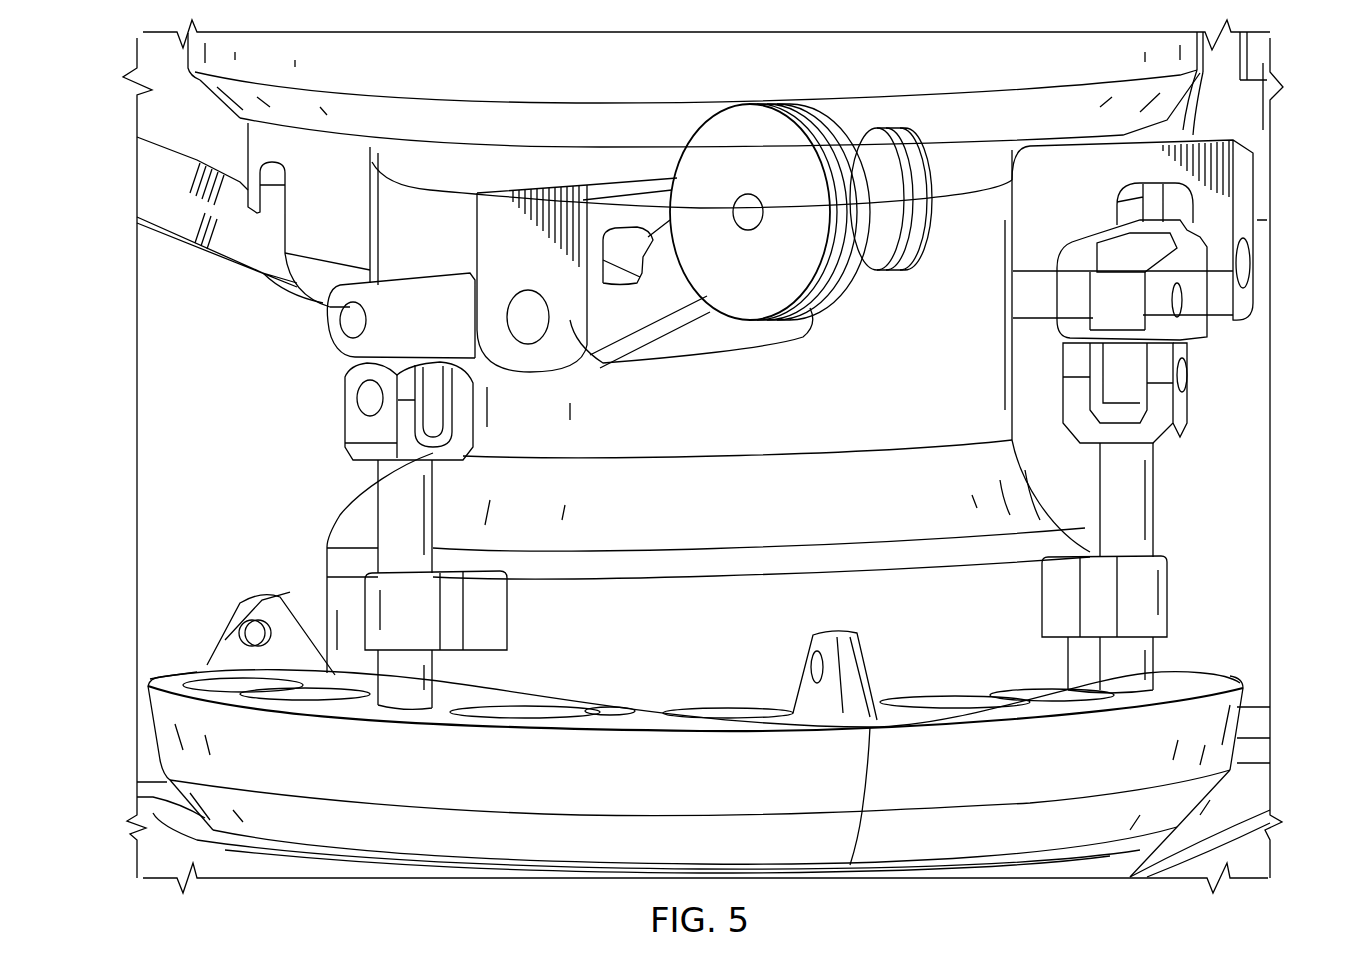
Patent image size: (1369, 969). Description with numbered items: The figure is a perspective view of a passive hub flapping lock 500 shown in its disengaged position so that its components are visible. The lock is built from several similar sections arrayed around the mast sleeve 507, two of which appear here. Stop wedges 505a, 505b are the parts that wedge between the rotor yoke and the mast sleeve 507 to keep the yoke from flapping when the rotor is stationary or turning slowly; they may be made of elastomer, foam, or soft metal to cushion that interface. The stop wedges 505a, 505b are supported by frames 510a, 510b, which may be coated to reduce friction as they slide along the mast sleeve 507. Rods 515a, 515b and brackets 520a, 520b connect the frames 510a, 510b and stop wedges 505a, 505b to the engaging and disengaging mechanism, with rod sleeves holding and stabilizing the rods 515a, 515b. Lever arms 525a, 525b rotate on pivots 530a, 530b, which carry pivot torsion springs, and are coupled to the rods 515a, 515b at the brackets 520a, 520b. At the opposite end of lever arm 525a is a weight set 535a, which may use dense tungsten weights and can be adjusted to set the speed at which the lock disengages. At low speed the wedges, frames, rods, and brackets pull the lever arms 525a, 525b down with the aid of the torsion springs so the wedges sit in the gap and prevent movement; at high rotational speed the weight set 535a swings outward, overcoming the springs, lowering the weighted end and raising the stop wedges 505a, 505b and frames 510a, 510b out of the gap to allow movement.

The passive hub flapping lock 500 is at (228, 396).
The stop wedge 505a is at (559, 786).
The stop wedge 505b is at (1071, 778).
The mast sleeve 507 is at (845, 420).
The frame 510a is at (553, 703).
The frame 510b is at (983, 693).
The rod 515a is at (375, 502).
The rod 515b is at (1153, 505).
The bracket 520a is at (350, 427).
The bracket 520b is at (1187, 407).
The lever arm 525a is at (665, 330).
The lever arm 525b is at (1193, 320).
The pivot 530a is at (530, 358).
The pivot 530b is at (1250, 297).
The weight set 535a is at (848, 300).